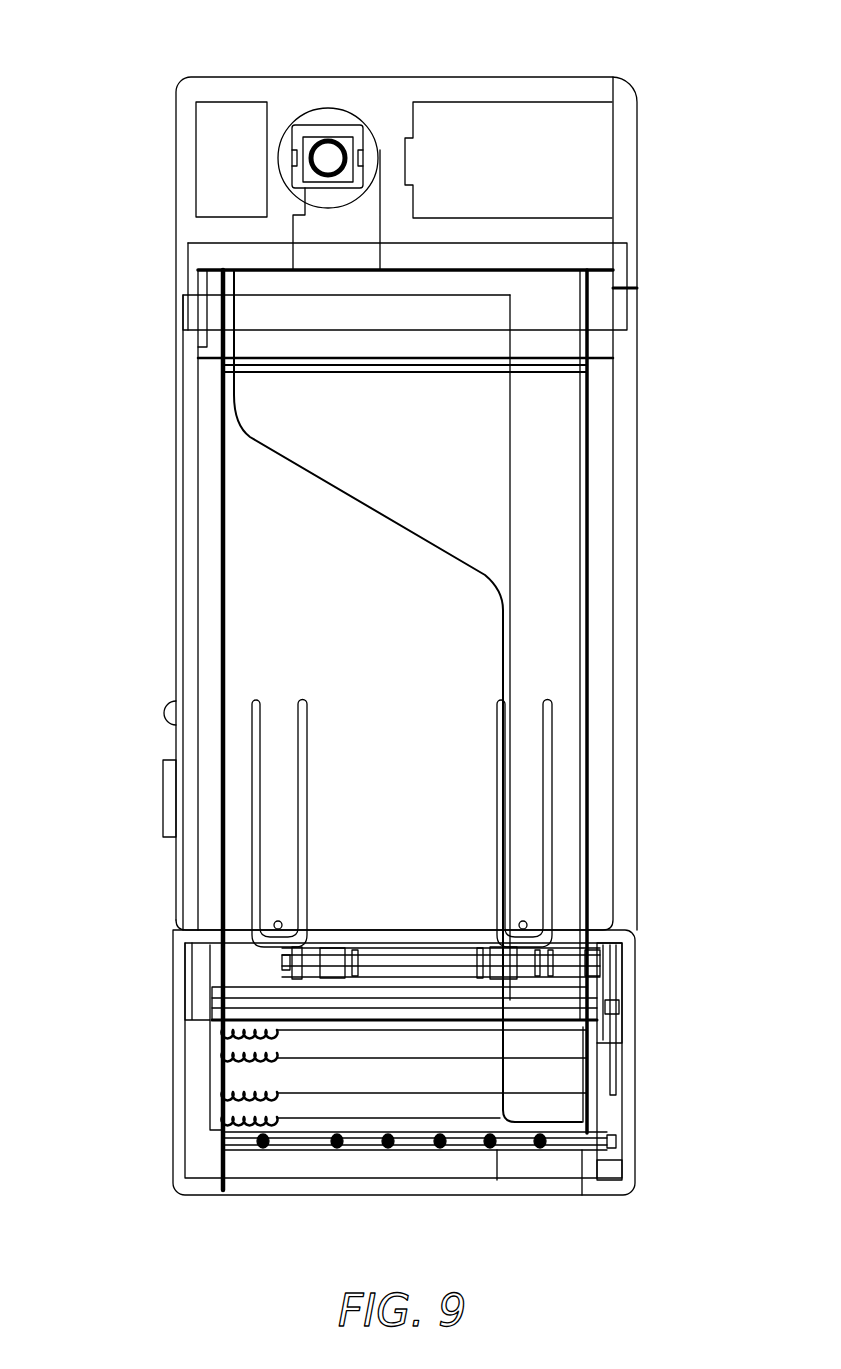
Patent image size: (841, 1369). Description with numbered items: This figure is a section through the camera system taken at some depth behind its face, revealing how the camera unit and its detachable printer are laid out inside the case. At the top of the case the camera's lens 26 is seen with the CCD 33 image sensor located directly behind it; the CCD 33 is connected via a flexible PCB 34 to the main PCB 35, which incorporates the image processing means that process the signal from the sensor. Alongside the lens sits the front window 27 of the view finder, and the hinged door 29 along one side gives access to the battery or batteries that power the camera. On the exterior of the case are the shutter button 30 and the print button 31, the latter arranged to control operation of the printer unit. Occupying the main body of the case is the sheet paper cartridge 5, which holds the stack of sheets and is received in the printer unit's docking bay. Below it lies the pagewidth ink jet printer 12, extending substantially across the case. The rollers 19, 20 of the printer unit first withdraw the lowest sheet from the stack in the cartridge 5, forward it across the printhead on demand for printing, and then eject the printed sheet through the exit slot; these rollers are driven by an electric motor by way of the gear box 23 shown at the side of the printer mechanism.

The sheet paper cartridge 5 is at (478, 655).
The pagewidth ink jet printer 12 is at (297, 1122).
The roller 19 is at (550, 965).
The roller 20 is at (397, 1150).
The gear box 23 is at (620, 1010).
The lens 26 is at (330, 150).
The front window 27 is at (222, 135).
The door 29 is at (624, 168).
The shutter button 30 is at (163, 787).
The print button 31 is at (164, 714).
The CCD 33 is at (312, 125).
The flexible PCB 34 is at (320, 228).
The main PCB 35 is at (515, 127).